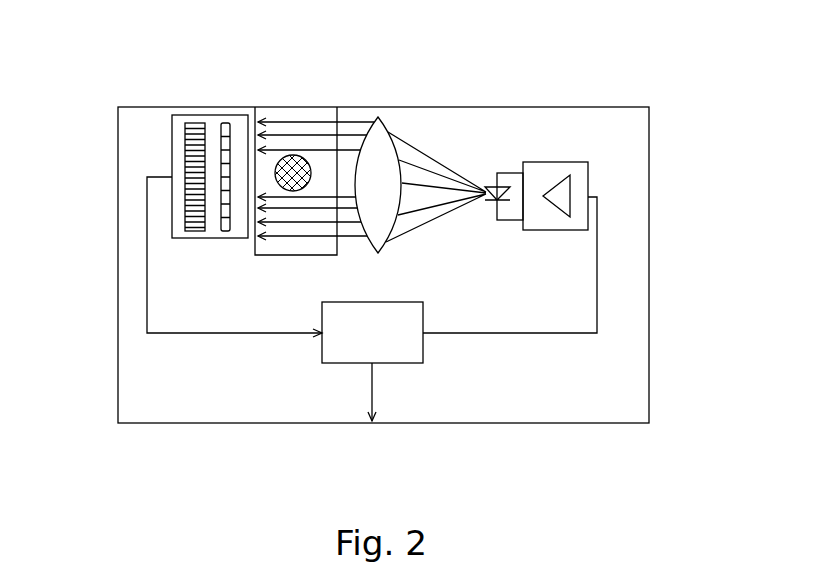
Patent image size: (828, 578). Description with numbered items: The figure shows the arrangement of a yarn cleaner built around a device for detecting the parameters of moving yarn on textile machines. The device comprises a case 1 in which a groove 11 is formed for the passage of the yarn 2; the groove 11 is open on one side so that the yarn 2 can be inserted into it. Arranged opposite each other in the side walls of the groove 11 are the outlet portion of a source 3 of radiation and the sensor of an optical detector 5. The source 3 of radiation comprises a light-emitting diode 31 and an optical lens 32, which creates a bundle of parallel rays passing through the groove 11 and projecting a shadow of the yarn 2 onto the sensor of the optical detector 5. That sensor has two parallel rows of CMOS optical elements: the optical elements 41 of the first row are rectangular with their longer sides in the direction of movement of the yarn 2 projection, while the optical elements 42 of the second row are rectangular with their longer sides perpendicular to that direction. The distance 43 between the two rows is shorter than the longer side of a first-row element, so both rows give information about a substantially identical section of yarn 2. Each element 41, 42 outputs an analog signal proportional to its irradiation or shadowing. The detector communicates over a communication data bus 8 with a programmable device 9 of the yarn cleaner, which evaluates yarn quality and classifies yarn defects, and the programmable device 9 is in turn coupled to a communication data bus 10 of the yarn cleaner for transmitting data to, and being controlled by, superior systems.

The case 1 is at (615, 132).
The yarn 2 is at (310, 156).
The source of radiation 3 is at (520, 153).
The optical detector 5 is at (180, 155).
The communication data bus 8 is at (218, 334).
The programmable device 9 is at (330, 350).
The communication data bus of the yarn cleaner 10 is at (371, 377).
The groove 11 is at (273, 150).
The light-emitting diode 31 is at (496, 201).
The optical lens 32 is at (375, 138).
The optical elements of the first row 41 is at (192, 123).
The optical elements of the second row 42 is at (225, 122).
The distance 43 is at (212, 120).